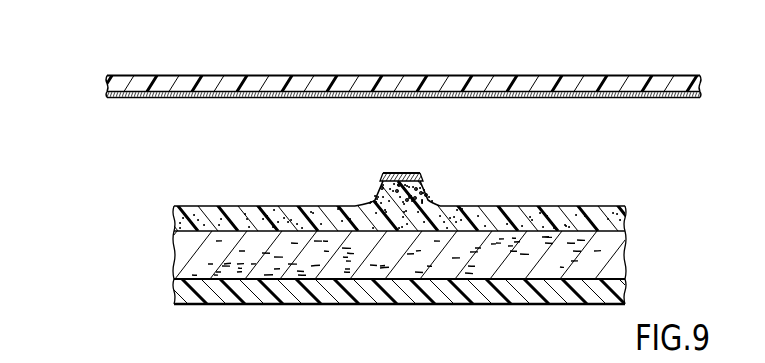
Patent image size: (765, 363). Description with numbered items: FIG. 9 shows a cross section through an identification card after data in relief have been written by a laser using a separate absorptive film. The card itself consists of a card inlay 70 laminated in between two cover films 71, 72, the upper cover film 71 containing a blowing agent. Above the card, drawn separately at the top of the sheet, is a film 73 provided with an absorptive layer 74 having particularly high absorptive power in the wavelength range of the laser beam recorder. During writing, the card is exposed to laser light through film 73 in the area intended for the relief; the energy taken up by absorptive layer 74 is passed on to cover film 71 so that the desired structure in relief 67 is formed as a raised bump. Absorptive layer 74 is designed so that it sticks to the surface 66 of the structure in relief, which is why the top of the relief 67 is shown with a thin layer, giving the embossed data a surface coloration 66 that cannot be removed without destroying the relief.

The surface of the structure in relief 66 is at (383, 176).
The structure in relief 67 is at (422, 182).
The card inlay 70 is at (180, 262).
The cover film 71 is at (176, 218).
The cover film 72 is at (178, 292).
The film 73 is at (112, 80).
The absorptive layer 74 is at (112, 99).